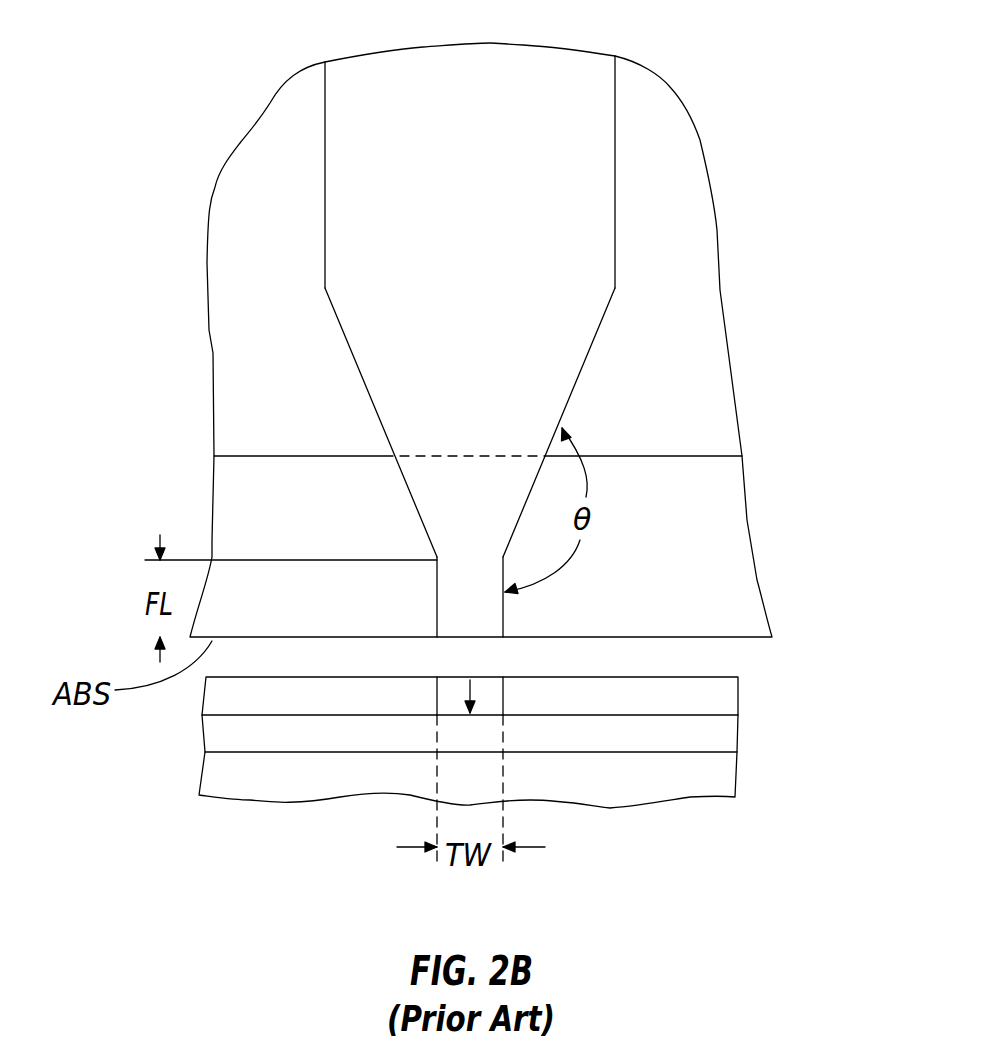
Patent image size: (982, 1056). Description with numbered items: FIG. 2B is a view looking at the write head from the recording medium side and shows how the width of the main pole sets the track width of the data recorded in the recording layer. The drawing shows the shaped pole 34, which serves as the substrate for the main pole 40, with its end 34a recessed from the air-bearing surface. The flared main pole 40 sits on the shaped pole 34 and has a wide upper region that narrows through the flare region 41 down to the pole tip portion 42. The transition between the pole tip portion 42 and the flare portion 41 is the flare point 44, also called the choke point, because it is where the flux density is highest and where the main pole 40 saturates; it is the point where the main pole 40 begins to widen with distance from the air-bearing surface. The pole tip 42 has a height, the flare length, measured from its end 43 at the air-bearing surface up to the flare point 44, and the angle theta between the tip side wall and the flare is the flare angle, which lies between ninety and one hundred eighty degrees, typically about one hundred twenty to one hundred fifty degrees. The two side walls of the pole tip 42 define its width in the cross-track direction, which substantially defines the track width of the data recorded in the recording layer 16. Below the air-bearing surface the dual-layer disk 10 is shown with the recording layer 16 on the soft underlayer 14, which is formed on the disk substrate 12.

The disk 10 is at (400, 791).
The disk substrate 12 is at (207, 777).
The soft underlayer 14 is at (210, 733).
The recording layer 16 is at (210, 693).
The shaped pole 34 is at (700, 313).
The end of shaped pole 34a is at (622, 455).
The main pole 40 is at (345, 173).
The flare region 41 is at (423, 470).
The pole tip portion 42 is at (452, 565).
The end of main pole tip 43 is at (462, 637).
The flare point 44 is at (500, 563).